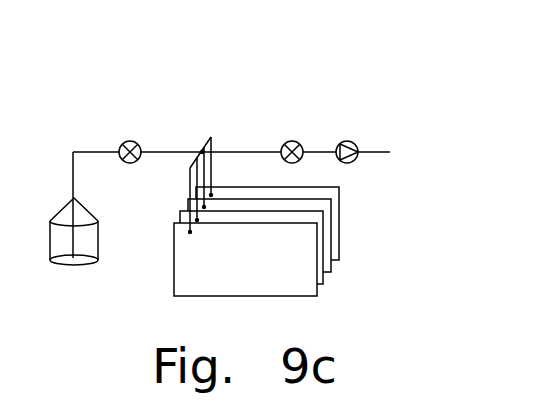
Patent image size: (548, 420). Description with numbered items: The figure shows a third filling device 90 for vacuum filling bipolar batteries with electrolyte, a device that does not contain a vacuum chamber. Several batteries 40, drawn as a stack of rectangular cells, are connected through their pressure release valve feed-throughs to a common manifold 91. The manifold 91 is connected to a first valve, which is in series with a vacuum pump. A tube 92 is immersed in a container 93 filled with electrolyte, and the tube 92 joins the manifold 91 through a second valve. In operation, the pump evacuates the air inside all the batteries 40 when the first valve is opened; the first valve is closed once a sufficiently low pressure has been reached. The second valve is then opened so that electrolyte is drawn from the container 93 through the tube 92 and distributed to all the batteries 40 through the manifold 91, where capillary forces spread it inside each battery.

The third filling device 90 is at (172, 100).
The manifold 91 is at (199, 146).
The tube 92 is at (73, 167).
The container 93 is at (52, 248).
The batteries 40 is at (308, 288).